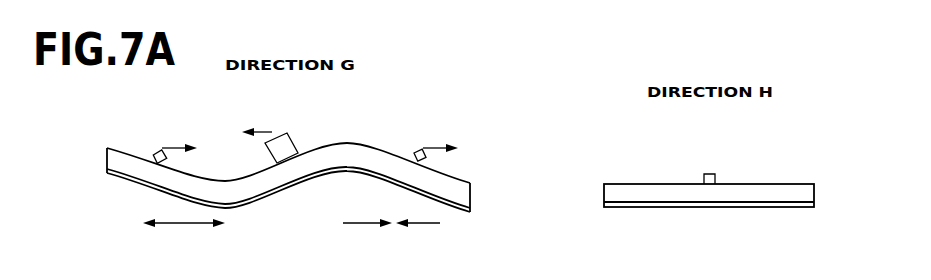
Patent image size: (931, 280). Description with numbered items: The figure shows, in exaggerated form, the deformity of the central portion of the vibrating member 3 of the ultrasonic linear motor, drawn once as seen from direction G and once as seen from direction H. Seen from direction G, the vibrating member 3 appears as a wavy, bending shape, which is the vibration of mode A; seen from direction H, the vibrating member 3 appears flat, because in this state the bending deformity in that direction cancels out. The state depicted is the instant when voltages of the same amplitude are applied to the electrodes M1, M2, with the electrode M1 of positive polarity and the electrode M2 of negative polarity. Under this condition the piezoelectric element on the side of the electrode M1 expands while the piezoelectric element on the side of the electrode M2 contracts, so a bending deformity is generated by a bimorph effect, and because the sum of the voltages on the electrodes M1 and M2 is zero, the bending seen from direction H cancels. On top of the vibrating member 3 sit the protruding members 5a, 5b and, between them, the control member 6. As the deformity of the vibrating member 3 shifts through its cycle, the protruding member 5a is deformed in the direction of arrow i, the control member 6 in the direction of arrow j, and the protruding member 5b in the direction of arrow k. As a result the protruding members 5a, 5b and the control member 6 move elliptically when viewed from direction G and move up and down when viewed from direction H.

The vibrating member 3 is at (471, 158).
The protruding member 5a is at (155, 153).
The protruding member 5b is at (416, 152).
The control member 6 is at (288, 146).
The arrow i is at (171, 148).
The arrow j is at (268, 132).
The arrow k is at (432, 148).
The electrode M1 is at (184, 234).
The electrode M2 is at (391, 235).